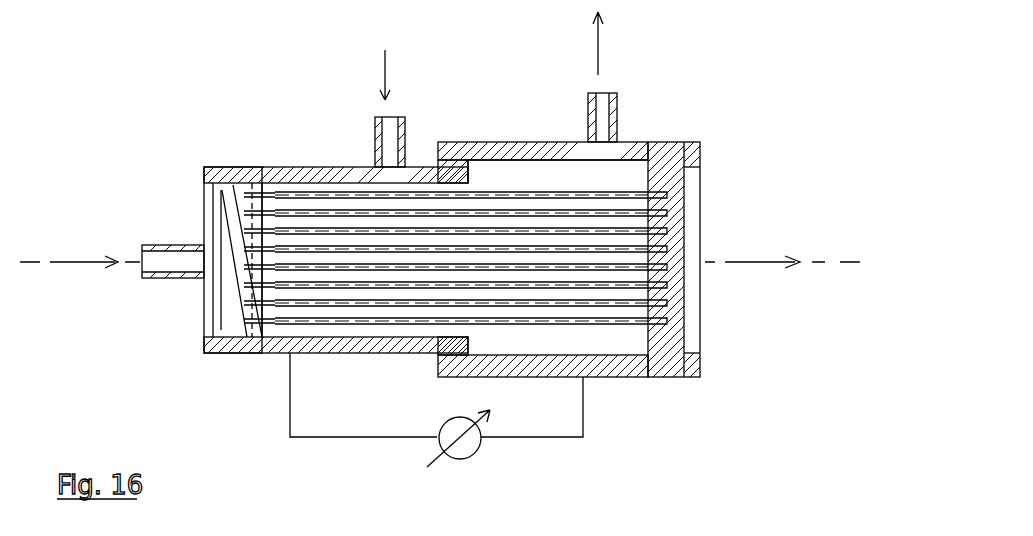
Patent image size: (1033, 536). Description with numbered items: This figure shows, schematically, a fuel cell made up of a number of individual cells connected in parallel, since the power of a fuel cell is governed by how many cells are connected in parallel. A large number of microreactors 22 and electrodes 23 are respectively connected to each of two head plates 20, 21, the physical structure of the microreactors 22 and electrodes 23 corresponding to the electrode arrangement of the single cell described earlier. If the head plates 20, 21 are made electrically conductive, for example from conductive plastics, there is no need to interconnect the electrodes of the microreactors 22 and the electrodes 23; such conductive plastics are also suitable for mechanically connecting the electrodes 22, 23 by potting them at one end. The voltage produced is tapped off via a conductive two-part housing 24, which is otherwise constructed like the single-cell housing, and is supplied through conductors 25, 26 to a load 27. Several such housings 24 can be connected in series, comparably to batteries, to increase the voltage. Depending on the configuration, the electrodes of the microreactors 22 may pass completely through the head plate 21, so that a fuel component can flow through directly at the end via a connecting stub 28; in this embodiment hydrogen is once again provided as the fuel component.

The head plate 20 is at (440, 244).
The head plate 21 is at (237, 290).
The microreactors 22 is at (324, 213).
The electrodes 23 is at (565, 190).
The conductive two-part housing 24 is at (631, 386).
The conductor 25 is at (287, 387).
The conductor 26 is at (547, 440).
The load 27 is at (463, 458).
The connecting stub 28 is at (170, 245).